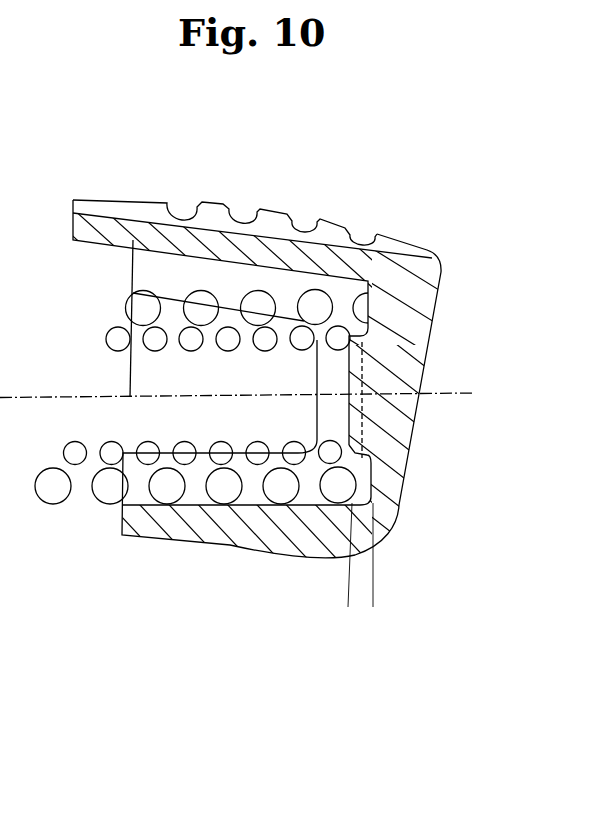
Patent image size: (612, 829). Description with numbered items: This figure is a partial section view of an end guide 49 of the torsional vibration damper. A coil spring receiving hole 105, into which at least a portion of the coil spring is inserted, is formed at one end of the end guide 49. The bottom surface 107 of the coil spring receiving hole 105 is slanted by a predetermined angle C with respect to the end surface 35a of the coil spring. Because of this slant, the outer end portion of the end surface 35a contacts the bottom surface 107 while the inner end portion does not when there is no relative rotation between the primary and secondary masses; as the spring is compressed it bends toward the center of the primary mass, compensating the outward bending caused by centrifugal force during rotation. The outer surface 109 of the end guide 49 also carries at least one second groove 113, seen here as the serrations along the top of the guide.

The end guide 49 is at (456, 220).
The outer surface 109 is at (108, 198).
The second groove 113 is at (244, 220).
The coil spring receiving hole 105 is at (261, 388).
The bottom surface 107 is at (372, 480).
The end surface 35a is at (362, 370).
The predetermined angle C is at (313, 595).